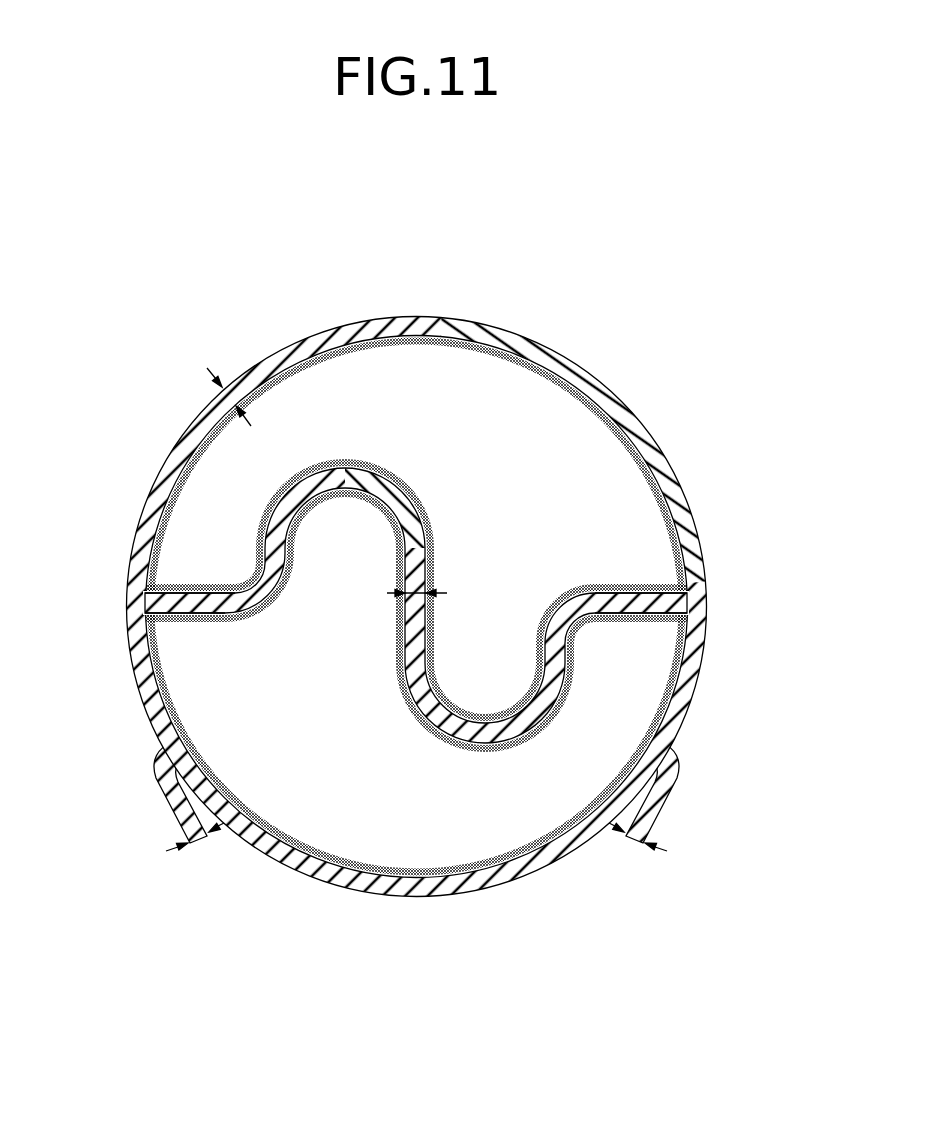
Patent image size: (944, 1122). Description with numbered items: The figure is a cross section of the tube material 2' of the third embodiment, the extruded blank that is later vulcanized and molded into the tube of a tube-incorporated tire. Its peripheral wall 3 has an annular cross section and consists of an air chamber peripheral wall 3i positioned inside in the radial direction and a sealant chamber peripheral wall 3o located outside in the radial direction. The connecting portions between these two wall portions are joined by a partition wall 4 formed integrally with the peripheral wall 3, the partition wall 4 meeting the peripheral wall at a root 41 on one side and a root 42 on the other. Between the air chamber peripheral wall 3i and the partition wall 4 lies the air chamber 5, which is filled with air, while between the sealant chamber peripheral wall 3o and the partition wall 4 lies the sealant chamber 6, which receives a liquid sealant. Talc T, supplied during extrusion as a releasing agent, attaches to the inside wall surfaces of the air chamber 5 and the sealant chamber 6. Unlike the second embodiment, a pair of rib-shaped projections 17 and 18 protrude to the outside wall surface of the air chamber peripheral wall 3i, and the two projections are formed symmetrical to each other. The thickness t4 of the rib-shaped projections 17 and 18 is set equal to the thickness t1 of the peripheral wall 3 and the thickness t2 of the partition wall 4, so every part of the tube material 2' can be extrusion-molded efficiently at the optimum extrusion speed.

The tube material 2' is at (419, 604).
The peripheral wall 3 is at (446, 604).
The sealant chamber peripheral wall 3o is at (409, 322).
The air chamber peripheral wall 3i is at (394, 898).
The partition wall 4 is at (416, 605).
The root of the partition wall 41 is at (147, 595).
The root of the partition wall 42 is at (681, 591).
The air chamber 5 is at (339, 761).
The sealant chamber 6 is at (526, 496).
The rib-shaped projection 17 is at (174, 806).
The rib-shaped projection 18 is at (661, 806).
The talc T is at (483, 346).
The thickness of the peripheral wall t1 is at (218, 404).
The thickness of the partition wall t2 is at (404, 598).
The thickness of the rib-shaped projections t4 is at (200, 846).